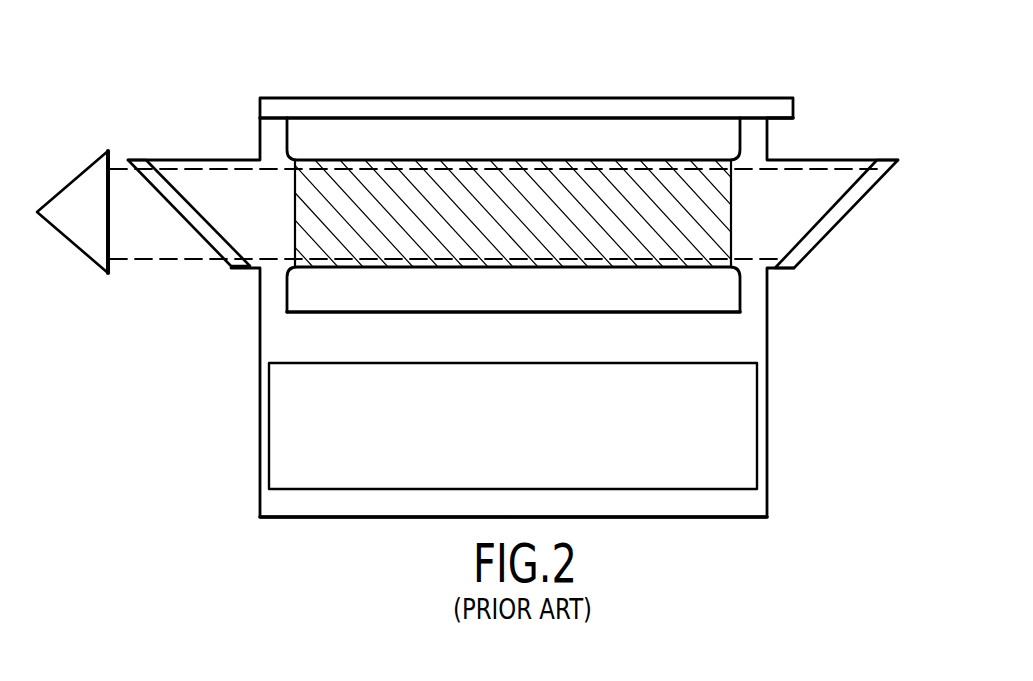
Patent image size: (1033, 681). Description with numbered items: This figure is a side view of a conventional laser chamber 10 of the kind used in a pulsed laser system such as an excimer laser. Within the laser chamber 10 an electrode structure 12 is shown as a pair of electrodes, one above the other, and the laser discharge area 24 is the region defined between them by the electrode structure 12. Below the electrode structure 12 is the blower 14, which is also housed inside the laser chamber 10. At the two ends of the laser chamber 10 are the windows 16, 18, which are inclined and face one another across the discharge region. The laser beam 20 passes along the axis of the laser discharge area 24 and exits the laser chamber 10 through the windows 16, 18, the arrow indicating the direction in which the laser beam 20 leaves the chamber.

The laser chamber 10 is at (820, 100).
The electrode structure 12 is at (509, 150).
The blower 14 is at (509, 442).
The window 16 is at (197, 232).
The window 18 is at (833, 230).
The laser beam 20 is at (113, 155).
The laser discharge area 24 is at (677, 213).